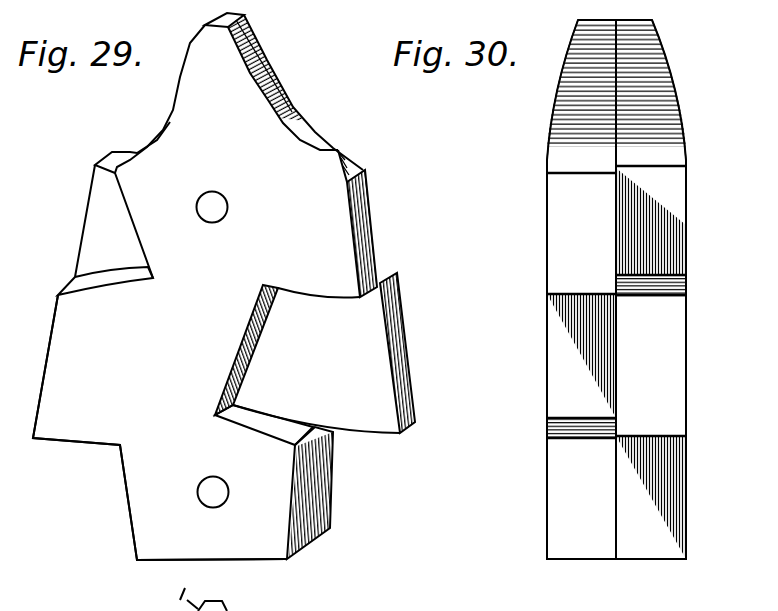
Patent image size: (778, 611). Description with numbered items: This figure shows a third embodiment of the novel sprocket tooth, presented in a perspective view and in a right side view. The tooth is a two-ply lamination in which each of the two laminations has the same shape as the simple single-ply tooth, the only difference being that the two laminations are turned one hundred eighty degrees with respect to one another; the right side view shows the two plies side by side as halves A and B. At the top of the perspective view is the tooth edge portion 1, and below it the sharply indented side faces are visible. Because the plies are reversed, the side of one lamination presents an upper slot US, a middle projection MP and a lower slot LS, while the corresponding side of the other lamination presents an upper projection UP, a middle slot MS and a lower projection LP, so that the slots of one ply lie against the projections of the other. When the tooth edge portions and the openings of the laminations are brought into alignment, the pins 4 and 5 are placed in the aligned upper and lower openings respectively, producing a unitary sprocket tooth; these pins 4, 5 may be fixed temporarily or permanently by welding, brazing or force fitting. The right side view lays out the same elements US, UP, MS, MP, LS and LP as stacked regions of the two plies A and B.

In FIG. 29, the tooth edge portion 1 is at (258, 22).
In FIG. 30, the tooth edge portion 1 is at (637, 42).
In FIG. 29, the upper slot US is at (337, 157).
In FIG. 30, the upper slot US is at (668, 204).
In FIG. 29, the upper projection UP is at (372, 232).
In FIG. 30, the upper projection UP is at (565, 233).
In FIG. 29, the middle projection MP is at (407, 365).
In FIG. 30, the middle projection MP is at (667, 368).
In FIG. 29, the middle slot MS is at (243, 350).
In FIG. 30, the middle slot MS is at (556, 369).
In FIG. 29, the lower slot LS is at (327, 487).
In FIG. 30, the lower slot LS is at (667, 507).
In FIG. 29, the lower projection LP is at (302, 547).
In FIG. 30, the lower projection LP is at (565, 507).
In FIG. 29, the pin 4 is at (216, 212).
In FIG. 29, the pin 5 is at (208, 488).
In FIG. 30, the left half A is at (558, 75).
In FIG. 30, the right half B is at (650, 80).